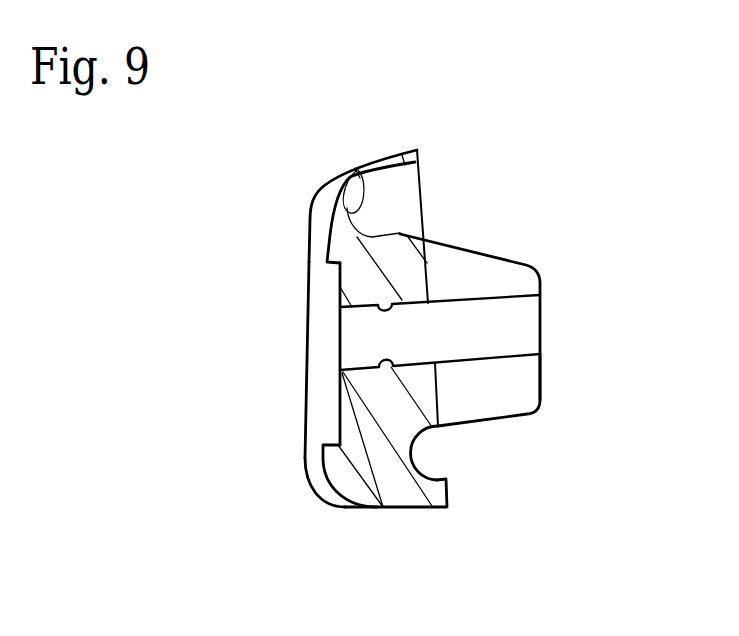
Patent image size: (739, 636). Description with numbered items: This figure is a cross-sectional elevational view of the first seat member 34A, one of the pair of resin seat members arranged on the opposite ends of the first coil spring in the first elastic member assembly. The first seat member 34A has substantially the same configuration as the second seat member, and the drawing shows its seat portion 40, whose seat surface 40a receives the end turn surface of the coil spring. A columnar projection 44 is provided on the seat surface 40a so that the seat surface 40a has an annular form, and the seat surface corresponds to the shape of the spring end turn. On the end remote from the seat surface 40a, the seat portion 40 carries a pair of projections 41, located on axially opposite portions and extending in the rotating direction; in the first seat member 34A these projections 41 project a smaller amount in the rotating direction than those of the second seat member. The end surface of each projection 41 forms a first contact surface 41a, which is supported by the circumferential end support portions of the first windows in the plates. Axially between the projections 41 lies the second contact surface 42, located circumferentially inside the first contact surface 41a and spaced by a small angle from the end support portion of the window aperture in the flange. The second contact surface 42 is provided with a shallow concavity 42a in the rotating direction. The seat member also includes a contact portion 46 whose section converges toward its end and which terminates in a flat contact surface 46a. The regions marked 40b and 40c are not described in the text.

The first seat member 34A is at (485, 133).
The seat portion 40 is at (369, 387).
The seat surface 40a is at (352, 172).
The end portion of clip 40b is at (407, 150).
The lower end tab of clip 40c is at (433, 492).
The projections 41 is at (317, 332).
The first contact surface 41a is at (305, 365).
The second contact surface 42 is at (330, 227).
The shallow concavity 42a is at (337, 407).
The columnar projection 44 is at (413, 277).
The contact portion 46 is at (520, 262).
The flat contact surface 46a is at (543, 377).